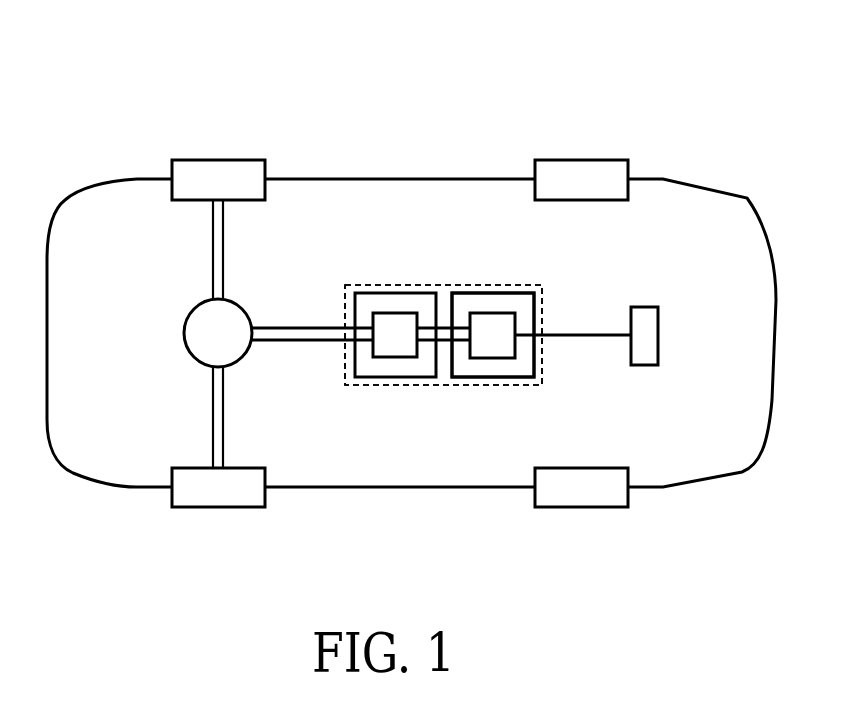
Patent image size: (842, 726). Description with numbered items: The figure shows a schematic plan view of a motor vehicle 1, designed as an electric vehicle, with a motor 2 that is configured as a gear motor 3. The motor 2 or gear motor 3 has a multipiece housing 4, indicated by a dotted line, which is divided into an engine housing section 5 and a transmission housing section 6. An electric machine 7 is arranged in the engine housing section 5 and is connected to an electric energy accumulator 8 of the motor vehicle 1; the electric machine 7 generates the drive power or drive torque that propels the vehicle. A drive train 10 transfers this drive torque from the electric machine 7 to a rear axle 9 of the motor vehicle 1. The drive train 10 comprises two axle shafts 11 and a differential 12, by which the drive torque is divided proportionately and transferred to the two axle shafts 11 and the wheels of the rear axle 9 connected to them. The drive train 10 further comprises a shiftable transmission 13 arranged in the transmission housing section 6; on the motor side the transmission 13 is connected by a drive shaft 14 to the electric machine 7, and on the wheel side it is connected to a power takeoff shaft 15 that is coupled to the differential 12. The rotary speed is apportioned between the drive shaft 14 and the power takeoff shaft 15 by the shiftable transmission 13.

The motor vehicle 1 is at (592, 136).
The motor 2 is at (449, 268).
The gear motor 3 is at (443, 335).
The multipiece housing 4 is at (490, 293).
The engine housing section 5 is at (522, 293).
The transmission housing section 6 is at (410, 293).
The electric machine 7 is at (491, 359).
The electric energy accumulator 8 is at (658, 337).
The rear axle 9 is at (220, 154).
The drive train 10 is at (294, 306).
The axle shafts 11 is at (212, 262).
The differential 12 is at (184, 333).
The shiftable transmission 13 is at (386, 313).
The drive shaft 14 is at (443, 343).
The power takeoff shaft 15 is at (292, 343).